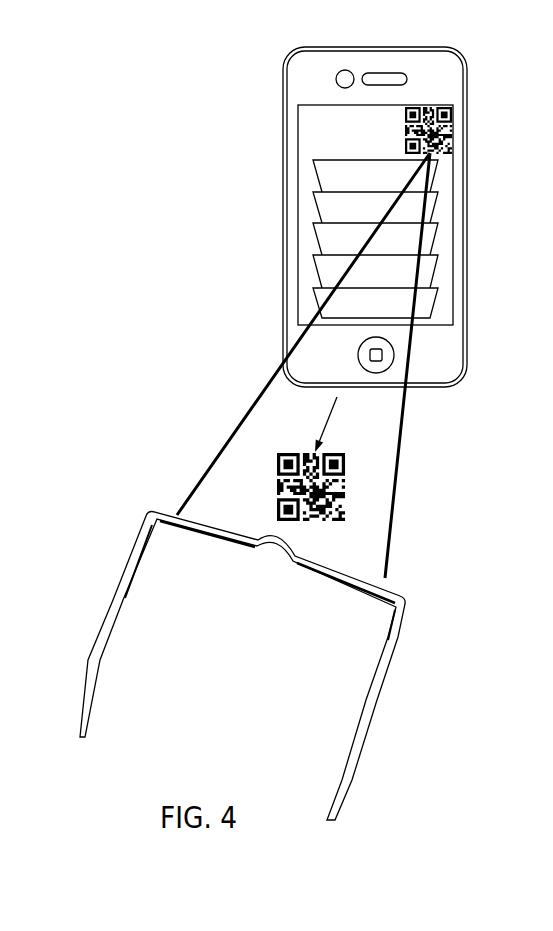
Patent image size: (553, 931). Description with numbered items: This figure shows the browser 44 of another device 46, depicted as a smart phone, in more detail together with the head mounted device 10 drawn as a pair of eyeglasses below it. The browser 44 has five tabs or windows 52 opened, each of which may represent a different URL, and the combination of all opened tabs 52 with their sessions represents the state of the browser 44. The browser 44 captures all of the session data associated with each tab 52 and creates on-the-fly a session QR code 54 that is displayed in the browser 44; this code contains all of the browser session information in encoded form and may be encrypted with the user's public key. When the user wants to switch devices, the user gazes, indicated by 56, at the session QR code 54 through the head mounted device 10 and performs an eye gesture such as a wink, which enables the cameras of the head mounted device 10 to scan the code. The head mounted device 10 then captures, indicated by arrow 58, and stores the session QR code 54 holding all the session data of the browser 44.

The head mounted device 10 is at (114, 539).
The browser 44 is at (305, 137).
The device 46 is at (468, 93).
The tabs or windows 52 is at (297, 206).
The session QR code 54 is at (450, 135).
The gaze 56 is at (177, 470).
The capture arrow 58 is at (328, 422).